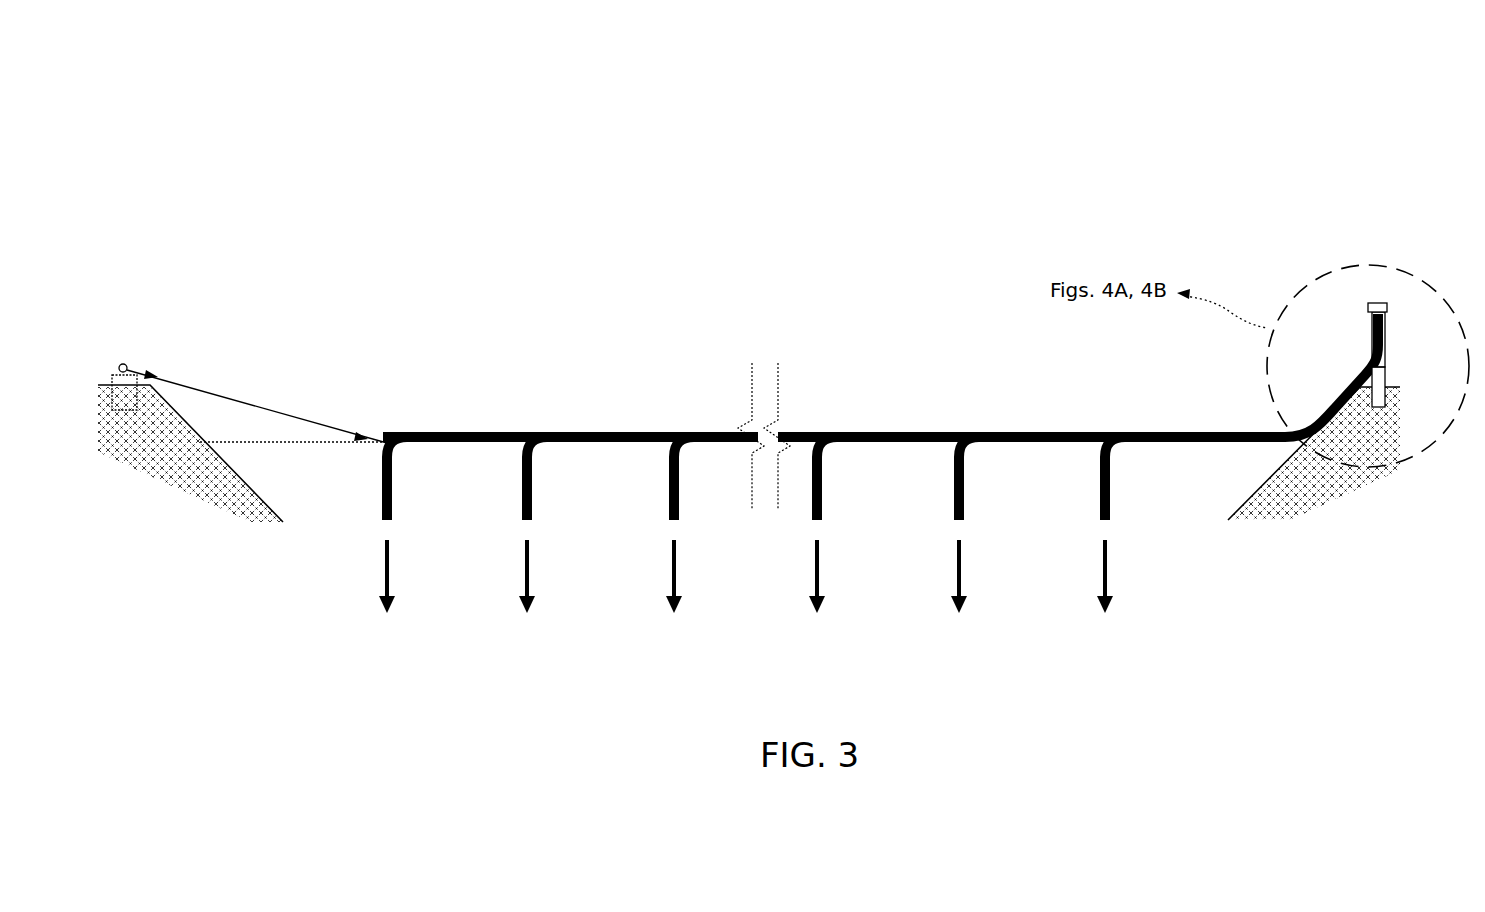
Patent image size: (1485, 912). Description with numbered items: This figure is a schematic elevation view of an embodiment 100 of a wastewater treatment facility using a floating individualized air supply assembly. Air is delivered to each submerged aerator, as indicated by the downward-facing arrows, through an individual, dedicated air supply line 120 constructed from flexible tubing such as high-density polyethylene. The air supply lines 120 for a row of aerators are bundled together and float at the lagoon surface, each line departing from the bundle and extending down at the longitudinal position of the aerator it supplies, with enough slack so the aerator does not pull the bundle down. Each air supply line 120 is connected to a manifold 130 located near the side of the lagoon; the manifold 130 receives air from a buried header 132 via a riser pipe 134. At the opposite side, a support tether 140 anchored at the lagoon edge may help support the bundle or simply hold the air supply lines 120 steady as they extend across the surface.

The wastewater treatment facility embodiment 100 is at (536, 135).
The air supply line 120 is at (392, 492).
The manifold 130 is at (1348, 309).
The buried header 132 is at (1380, 417).
The riser pipe 134 is at (1381, 373).
The support tether 140 is at (236, 397).